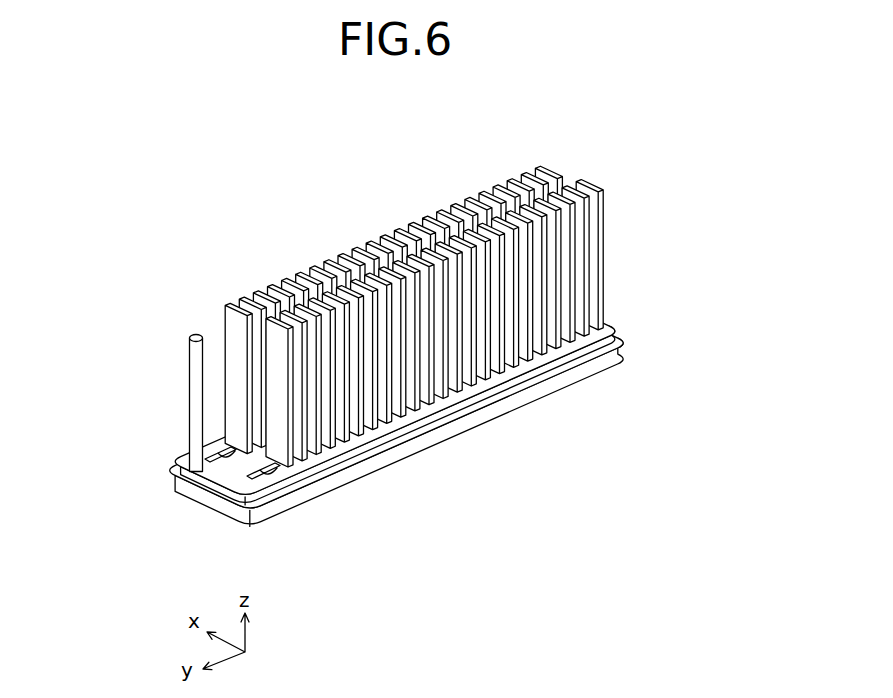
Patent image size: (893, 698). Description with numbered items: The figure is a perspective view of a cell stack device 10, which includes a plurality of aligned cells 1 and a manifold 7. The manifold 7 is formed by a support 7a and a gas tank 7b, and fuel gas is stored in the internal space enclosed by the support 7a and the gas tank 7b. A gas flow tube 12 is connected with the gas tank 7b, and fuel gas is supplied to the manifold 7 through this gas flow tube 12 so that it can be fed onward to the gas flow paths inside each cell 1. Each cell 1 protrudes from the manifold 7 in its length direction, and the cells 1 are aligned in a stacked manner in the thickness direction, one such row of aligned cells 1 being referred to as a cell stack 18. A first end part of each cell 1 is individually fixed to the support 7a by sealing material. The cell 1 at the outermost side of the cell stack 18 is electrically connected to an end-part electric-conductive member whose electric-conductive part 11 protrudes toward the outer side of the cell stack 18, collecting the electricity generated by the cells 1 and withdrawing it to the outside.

The cell stack device 10 is at (224, 163).
The cell 1 is at (597, 213).
The cell stack 18 is at (542, 158).
The manifold 7 is at (418, 553).
The support 7a is at (313, 473).
The gas tank 7b is at (372, 467).
The electric-conductive part 11 is at (267, 467).
The gas flow tube 12 is at (193, 357).